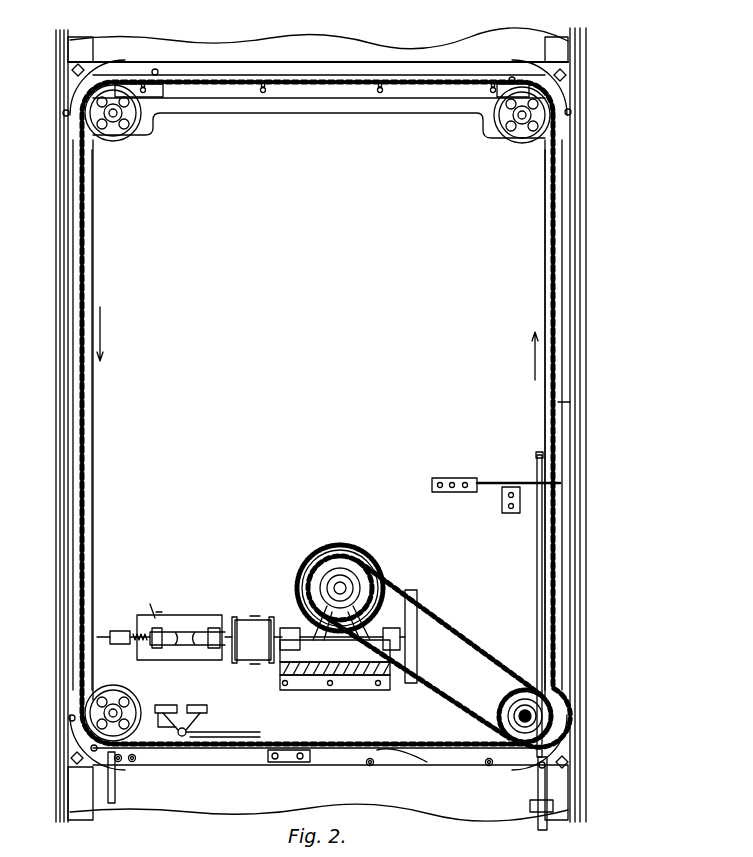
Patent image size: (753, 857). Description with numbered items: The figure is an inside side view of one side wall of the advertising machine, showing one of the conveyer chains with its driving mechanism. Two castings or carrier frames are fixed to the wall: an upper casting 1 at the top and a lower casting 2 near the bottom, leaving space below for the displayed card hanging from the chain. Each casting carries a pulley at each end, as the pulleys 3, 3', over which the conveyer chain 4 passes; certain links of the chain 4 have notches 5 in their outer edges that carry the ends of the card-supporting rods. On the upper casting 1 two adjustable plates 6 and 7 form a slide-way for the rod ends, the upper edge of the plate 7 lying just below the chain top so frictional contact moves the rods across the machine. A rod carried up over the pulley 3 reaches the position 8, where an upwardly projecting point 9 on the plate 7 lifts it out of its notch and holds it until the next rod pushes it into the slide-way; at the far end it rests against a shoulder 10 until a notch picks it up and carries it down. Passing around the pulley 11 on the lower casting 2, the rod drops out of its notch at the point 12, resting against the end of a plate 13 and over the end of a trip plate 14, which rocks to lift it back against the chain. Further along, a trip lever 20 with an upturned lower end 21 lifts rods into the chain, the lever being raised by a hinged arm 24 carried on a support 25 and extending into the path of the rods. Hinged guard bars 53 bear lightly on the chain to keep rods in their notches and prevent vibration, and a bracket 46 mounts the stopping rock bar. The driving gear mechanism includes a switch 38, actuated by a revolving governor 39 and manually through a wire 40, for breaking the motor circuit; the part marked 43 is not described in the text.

The upper casting or carrier frame 1 is at (215, 110).
The lower casting or carrier frame 2 is at (212, 735).
The pulley 3 is at (513, 125).
The pulley 3' is at (114, 124).
The conveyer chain 4 is at (90, 196).
The notch 5 is at (90, 246).
The plate 6 is at (303, 68).
The plate 7 is at (333, 92).
The position or recess 8 is at (505, 99).
The point or lug 9 is at (513, 78).
The shoulder 10 is at (120, 78).
The pulley 11 is at (118, 698).
The point or rest position 12 is at (104, 754).
The plate 13 is at (118, 766).
The trip plate 14 is at (178, 755).
The trip lever 20 is at (537, 586).
The upturned lower end of trip lever 21 is at (537, 790).
The hinged arm 24 is at (492, 482).
The support 25 is at (501, 506).
The switch mechanism 38 is at (135, 645).
The revolving governor 39 is at (230, 615).
The wire 40 is at (105, 634).
The motor 43 is at (236, 660).
The bracket 46 is at (194, 705).
The guard bar 53 is at (565, 255).